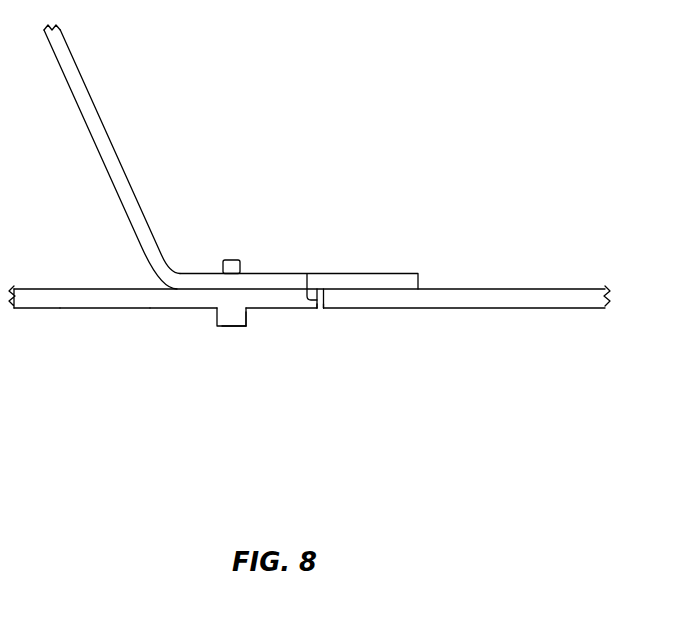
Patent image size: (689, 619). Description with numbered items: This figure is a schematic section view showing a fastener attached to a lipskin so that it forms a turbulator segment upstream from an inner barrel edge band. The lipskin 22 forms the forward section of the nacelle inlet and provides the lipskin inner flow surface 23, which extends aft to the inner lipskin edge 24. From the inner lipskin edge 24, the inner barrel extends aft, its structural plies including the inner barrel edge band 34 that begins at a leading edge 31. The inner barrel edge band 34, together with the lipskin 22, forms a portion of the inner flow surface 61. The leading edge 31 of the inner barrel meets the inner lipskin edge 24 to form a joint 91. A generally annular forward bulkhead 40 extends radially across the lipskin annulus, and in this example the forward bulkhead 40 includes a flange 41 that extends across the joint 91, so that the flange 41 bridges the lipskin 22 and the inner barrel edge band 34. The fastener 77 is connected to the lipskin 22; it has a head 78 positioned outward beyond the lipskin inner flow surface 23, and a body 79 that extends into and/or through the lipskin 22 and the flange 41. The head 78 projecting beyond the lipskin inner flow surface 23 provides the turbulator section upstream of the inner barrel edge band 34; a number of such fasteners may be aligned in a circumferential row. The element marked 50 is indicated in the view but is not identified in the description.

The lipskin 22 is at (82, 297).
The lipskin inner flow surface 23 is at (163, 308).
The inner lipskin edge 24 is at (307, 275).
The leading edge 31 is at (326, 297).
The inner barrel edge band 34 is at (497, 300).
The forward bulkhead 40 is at (87, 112).
The flange 41 is at (353, 282).
The fastener 50 is at (230, 374).
The inner flow surface 61 is at (115, 308).
The fastener 77 is at (259, 347).
The head 78 is at (230, 318).
The body 79 is at (232, 265).
The joint 91 is at (328, 338).